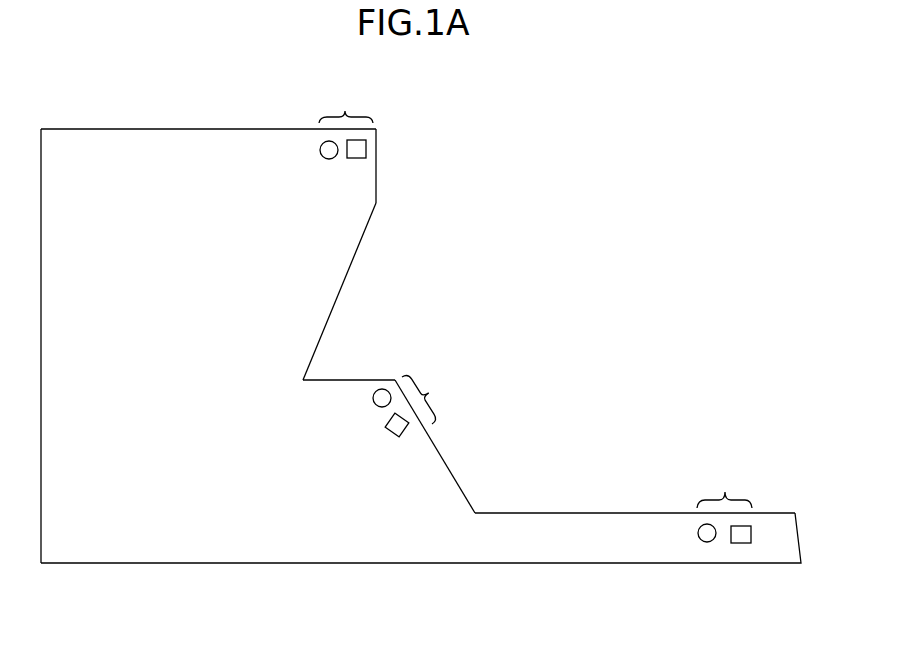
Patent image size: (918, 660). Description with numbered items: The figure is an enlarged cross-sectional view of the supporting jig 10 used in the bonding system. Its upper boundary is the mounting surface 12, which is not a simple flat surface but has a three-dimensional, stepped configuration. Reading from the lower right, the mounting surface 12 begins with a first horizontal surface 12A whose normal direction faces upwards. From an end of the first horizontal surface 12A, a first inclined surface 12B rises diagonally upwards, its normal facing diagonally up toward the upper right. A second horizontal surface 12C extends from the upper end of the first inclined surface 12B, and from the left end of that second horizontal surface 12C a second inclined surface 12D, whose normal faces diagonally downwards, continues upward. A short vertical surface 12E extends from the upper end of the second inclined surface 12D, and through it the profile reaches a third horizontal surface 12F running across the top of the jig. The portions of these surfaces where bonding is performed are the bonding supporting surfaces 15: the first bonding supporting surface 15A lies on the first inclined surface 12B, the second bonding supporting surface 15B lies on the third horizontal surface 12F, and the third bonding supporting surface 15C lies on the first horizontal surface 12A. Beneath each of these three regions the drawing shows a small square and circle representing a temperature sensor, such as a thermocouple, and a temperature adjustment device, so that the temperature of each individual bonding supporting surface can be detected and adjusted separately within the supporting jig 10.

The supporting jig 10 is at (648, 206).
The mounting surface 12 is at (550, 366).
The first horizontal surface 12A is at (643, 512).
The first inclined surface 12B is at (437, 443).
The second horizontal surface 12C is at (358, 379).
The second inclined surface 12D is at (344, 290).
The vertical surface 12E is at (378, 174).
The third horizontal surface 12F is at (257, 128).
The bonding supporting surface 15 is at (563, 291).
The first bonding supporting surface 15A is at (471, 400).
The second bonding supporting surface 15B is at (372, 98).
The third bonding supporting surface 15C is at (752, 482).